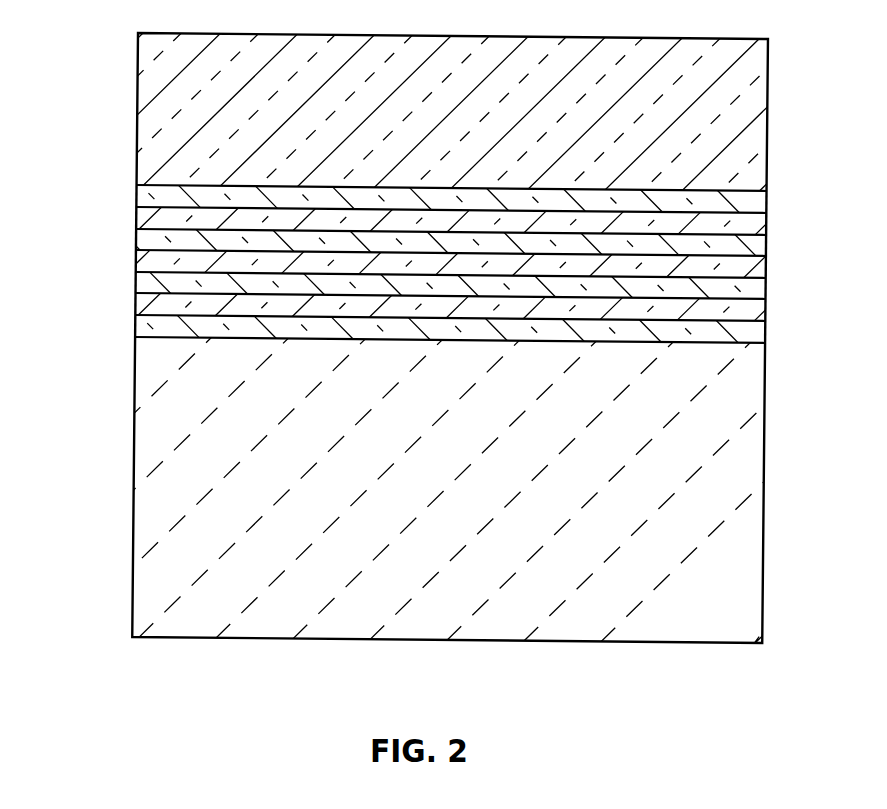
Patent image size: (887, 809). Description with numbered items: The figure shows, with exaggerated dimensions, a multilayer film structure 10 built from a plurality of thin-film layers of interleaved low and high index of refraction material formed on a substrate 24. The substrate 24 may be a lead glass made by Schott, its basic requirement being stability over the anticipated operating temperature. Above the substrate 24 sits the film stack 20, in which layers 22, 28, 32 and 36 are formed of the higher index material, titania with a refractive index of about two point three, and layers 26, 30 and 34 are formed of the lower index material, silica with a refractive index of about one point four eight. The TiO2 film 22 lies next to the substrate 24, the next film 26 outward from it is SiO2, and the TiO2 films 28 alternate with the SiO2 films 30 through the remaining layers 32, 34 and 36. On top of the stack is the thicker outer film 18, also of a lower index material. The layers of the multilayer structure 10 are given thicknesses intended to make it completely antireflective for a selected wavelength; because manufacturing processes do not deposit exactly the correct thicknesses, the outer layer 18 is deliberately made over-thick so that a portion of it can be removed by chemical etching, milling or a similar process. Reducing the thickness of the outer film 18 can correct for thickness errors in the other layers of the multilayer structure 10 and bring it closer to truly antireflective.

The multilayer film structure 10 is at (68, 166).
The outer film 18 is at (750, 135).
The film stack 20 is at (451, 263).
The TiO2 film 22 is at (160, 325).
The substrate 24 is at (713, 482).
The SiO2 film 26 is at (158, 304).
The TiO2 film 28 is at (155, 281).
The SiO2 film 30 is at (158, 261).
The higher index layer 32 is at (157, 241).
The lower index layer 34 is at (158, 218).
The higher index layer 36 is at (155, 196).